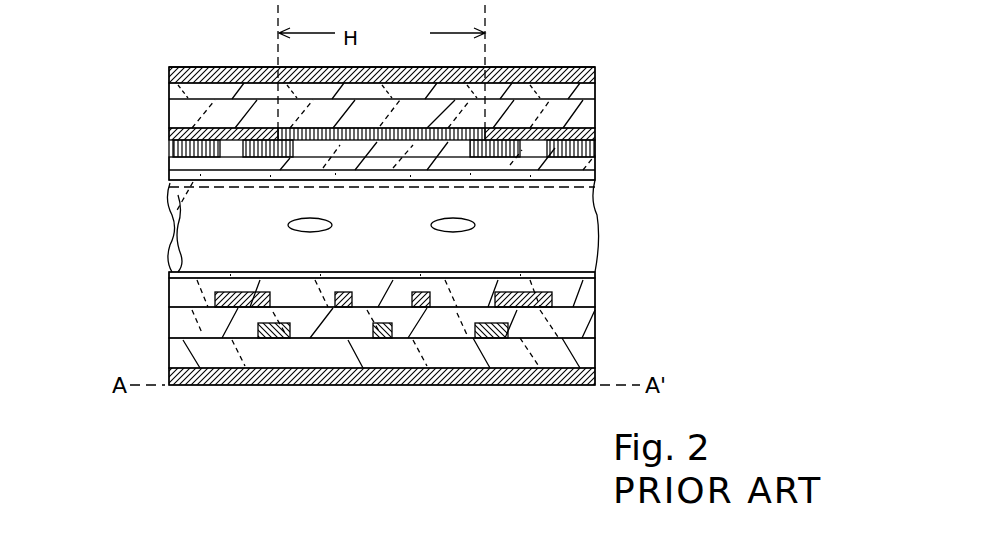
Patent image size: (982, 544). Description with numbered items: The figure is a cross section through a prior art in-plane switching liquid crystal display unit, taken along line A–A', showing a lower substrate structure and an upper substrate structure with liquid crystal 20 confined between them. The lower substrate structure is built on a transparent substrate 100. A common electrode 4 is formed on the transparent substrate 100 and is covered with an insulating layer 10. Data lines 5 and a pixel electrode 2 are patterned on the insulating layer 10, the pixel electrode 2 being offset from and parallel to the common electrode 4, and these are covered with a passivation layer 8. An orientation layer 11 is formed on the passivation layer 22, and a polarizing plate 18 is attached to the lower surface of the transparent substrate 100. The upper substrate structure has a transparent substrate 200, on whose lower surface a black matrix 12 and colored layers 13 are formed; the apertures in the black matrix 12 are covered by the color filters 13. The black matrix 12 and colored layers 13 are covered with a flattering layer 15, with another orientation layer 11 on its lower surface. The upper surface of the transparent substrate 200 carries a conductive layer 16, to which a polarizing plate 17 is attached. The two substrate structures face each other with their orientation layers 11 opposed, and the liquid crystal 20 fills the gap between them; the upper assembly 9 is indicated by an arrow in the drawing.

The pixel electrode 2 is at (350, 290).
The common electrode 4 is at (288, 338).
The data line 5 is at (548, 292).
The passivation layer 8 is at (662, 305).
The upper substrate assembly 9 is at (140, 129).
The insulating layer 10 is at (170, 323).
The orientation layer 11 is at (176, 225).
The black matrix 12 is at (595, 134).
The colored layers 13 is at (240, 160).
The flattering layer 15 is at (595, 165).
The conductive layer 16 is at (595, 72).
The polarizing plate 17 is at (193, 67).
The polarizing plate 18 is at (595, 372).
The liquid crystal 20 is at (477, 225).
The passivation layer 22 is at (170, 283).
The transparent substrate 100 is at (595, 345).
The transparent substrate 200 is at (595, 108).